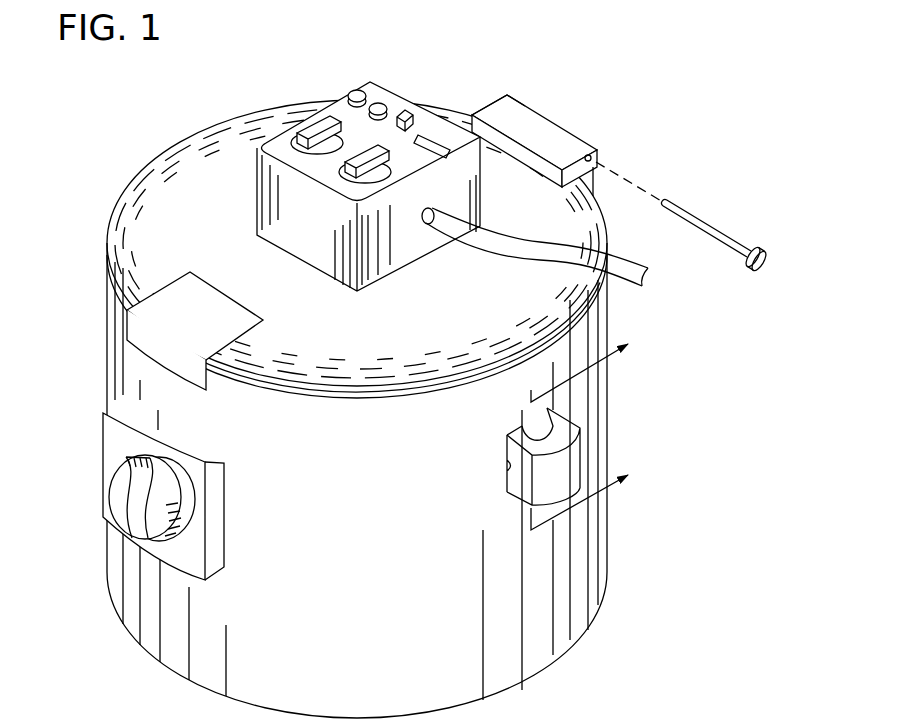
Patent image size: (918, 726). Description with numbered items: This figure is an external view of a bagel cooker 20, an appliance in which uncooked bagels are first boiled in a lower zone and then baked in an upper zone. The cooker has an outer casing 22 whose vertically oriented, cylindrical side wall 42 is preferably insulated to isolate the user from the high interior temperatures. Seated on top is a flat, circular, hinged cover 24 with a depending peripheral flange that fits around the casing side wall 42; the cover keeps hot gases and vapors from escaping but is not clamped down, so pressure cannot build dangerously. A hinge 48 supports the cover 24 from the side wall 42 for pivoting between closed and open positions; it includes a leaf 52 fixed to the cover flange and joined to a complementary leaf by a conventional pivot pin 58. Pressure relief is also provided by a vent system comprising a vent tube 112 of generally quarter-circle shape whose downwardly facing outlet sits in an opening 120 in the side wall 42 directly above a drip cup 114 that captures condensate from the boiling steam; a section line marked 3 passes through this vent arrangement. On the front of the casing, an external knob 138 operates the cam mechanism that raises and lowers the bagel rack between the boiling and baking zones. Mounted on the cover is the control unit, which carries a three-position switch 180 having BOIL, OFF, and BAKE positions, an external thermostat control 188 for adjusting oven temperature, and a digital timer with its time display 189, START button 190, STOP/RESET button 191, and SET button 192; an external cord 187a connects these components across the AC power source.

The bagel cooker 20 is at (640, 403).
The casing 22 is at (108, 337).
The hinged cover 24 is at (150, 155).
The side wall 42 is at (326, 545).
The hinge 48 is at (560, 120).
The hinge leaf 52 is at (494, 93).
The pivot pin 58 is at (752, 272).
The vent tube 112 is at (517, 424).
The drip cup 114 is at (504, 485).
The opening 120 is at (510, 463).
The knob 138 is at (113, 483).
The three-position switch 180 is at (300, 128).
The external cord 187a is at (510, 254).
The external control 188 is at (344, 182).
The time display 189 is at (485, 192).
The START button 190 is at (353, 89).
The STOP/RESET button 191 is at (380, 103).
The SET button 192 is at (414, 116).
The section line 3- 3 is at (592, 429).